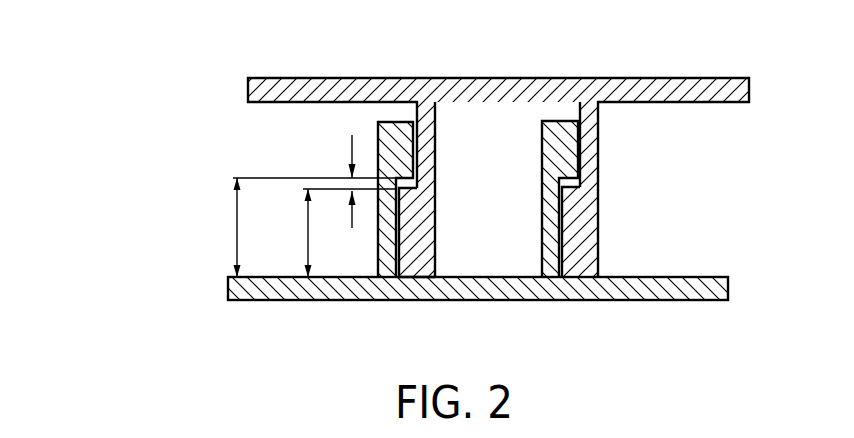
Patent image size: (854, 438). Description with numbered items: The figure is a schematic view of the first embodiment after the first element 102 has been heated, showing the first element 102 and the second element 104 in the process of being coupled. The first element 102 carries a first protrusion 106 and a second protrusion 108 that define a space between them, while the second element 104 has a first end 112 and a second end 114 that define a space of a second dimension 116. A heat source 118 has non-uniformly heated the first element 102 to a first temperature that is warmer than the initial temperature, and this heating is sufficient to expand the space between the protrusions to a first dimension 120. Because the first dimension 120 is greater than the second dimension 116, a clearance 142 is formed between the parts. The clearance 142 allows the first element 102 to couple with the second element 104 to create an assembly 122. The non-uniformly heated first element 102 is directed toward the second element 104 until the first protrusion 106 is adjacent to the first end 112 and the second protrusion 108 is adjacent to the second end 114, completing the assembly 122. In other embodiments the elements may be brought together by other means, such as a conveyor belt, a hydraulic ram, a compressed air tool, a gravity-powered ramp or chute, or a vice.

The first element 102 is at (261, 300).
The second element 104 is at (312, 78).
The first protrusion 106 is at (404, 180).
The second protrusion 108 is at (426, 274).
The first end 112 is at (407, 190).
The second end 114 is at (423, 276).
The second dimension 116 is at (308, 229).
The heat source 118 is at (228, 288).
The first dimension 120 is at (237, 224).
The assembly 122 is at (202, 173).
The clearance 142 is at (351, 200).